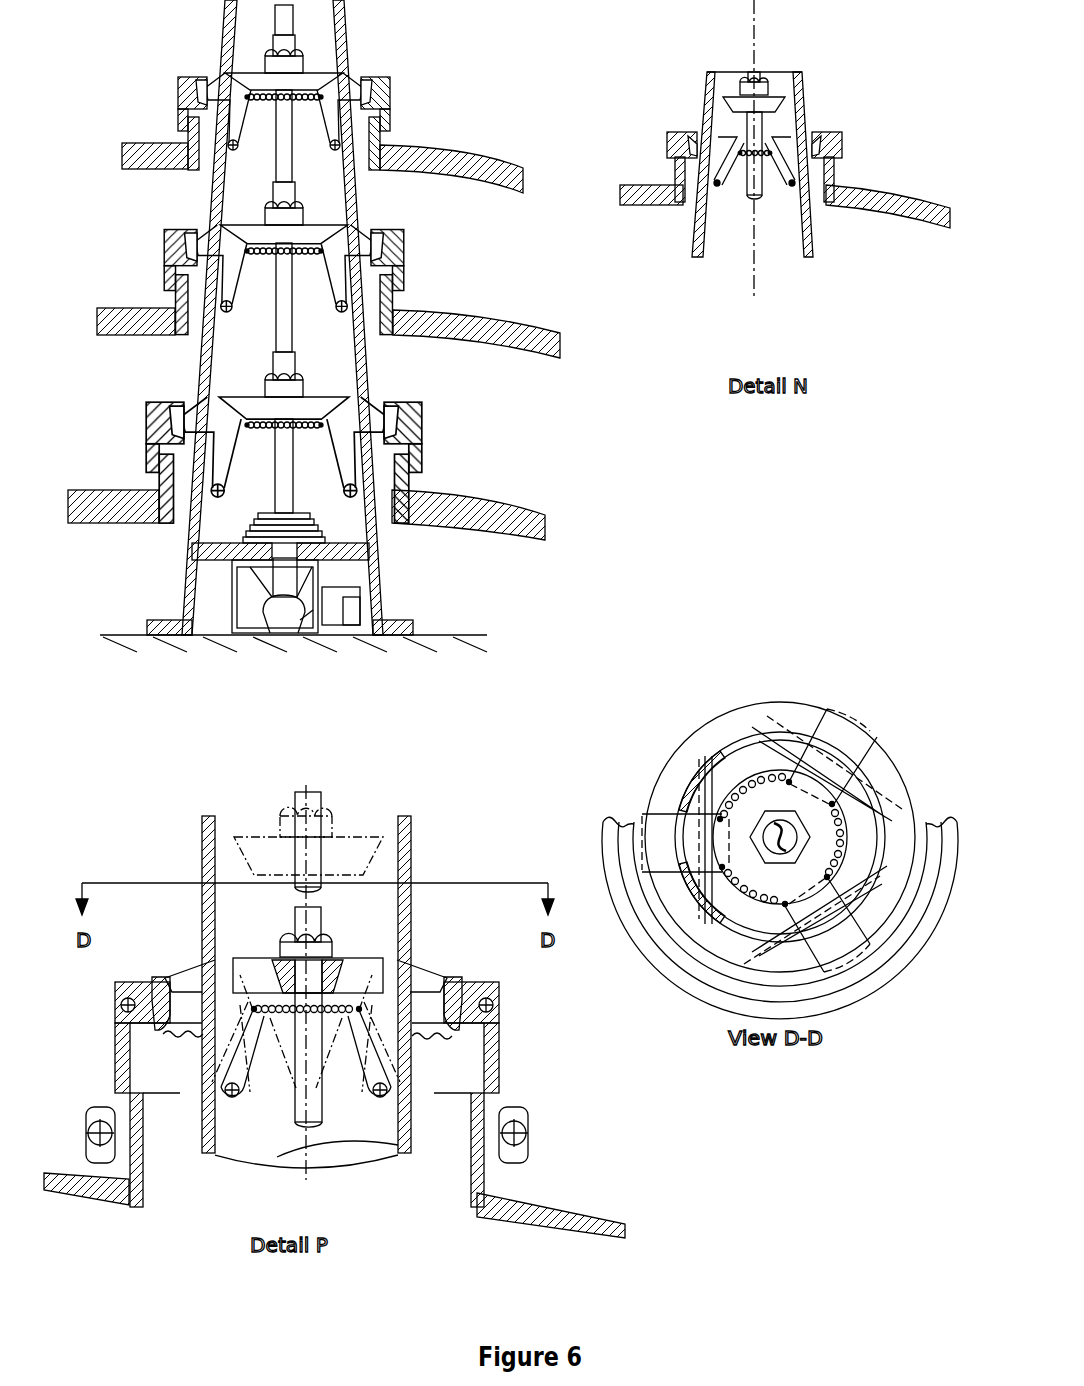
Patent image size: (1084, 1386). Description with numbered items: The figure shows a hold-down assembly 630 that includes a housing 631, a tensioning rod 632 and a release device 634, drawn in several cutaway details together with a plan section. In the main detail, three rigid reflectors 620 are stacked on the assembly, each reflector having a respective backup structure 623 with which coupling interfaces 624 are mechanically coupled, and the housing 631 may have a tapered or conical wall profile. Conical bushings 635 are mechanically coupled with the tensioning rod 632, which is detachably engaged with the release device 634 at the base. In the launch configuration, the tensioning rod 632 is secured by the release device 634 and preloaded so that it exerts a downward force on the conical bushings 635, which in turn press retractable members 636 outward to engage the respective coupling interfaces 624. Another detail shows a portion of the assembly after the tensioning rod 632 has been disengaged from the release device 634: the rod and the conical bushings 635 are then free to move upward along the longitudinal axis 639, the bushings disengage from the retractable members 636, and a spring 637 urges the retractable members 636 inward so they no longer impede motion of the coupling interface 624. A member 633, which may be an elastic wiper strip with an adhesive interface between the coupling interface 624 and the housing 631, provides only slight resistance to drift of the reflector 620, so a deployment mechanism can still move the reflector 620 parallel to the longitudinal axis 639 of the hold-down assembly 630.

The rigid reflector 620 is at (505, 194).
The backup structure 623 is at (604, 825).
The coupling interface 624 is at (355, 82).
The hold-down assembly 630 is at (183, 31).
The housing 631 is at (348, 200).
The tensioning rod 632 is at (283, 333).
The member 633 is at (427, 1036).
The release device 634 is at (323, 608).
The conical bushing 635 is at (258, 86).
The retractable member 636 is at (198, 412).
The spring 637 is at (305, 253).
The longitudinal axis 639 is at (756, 267).